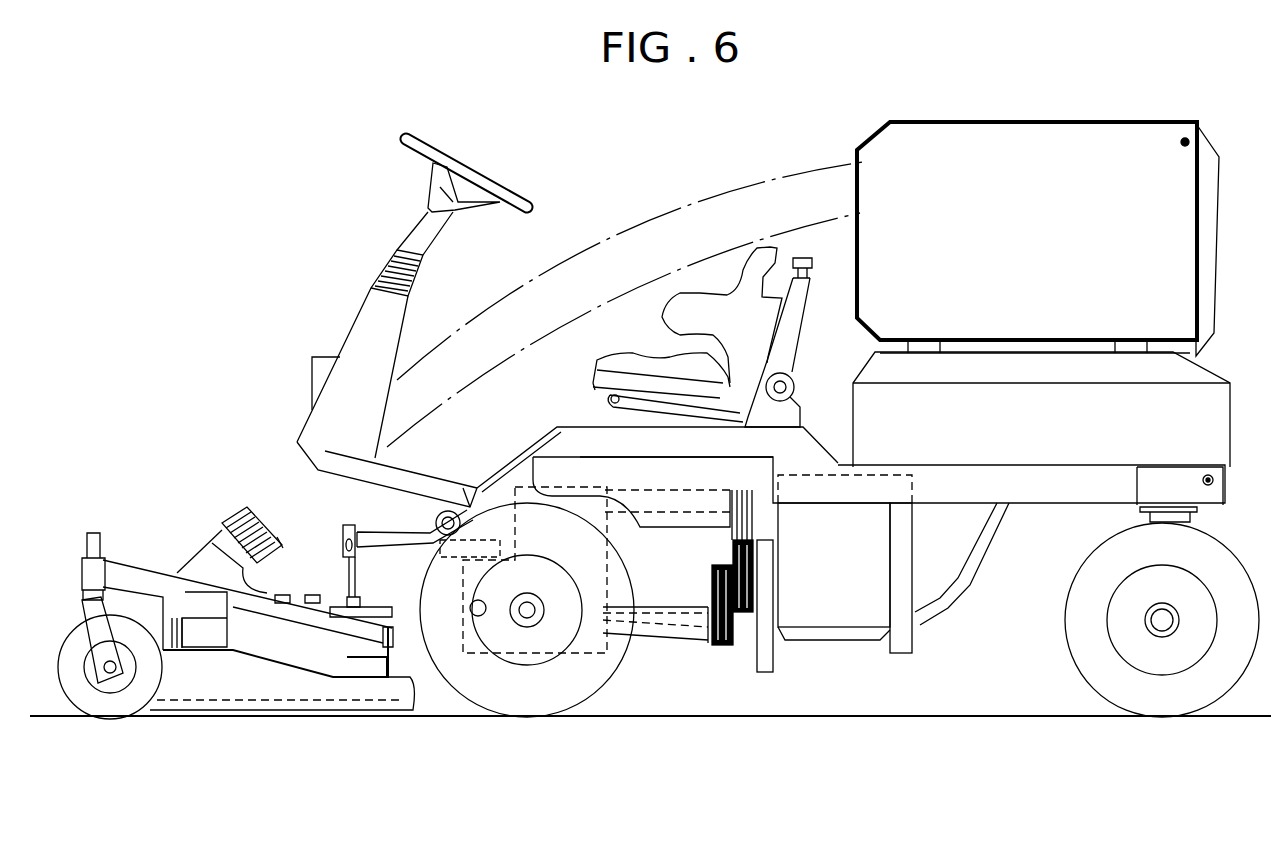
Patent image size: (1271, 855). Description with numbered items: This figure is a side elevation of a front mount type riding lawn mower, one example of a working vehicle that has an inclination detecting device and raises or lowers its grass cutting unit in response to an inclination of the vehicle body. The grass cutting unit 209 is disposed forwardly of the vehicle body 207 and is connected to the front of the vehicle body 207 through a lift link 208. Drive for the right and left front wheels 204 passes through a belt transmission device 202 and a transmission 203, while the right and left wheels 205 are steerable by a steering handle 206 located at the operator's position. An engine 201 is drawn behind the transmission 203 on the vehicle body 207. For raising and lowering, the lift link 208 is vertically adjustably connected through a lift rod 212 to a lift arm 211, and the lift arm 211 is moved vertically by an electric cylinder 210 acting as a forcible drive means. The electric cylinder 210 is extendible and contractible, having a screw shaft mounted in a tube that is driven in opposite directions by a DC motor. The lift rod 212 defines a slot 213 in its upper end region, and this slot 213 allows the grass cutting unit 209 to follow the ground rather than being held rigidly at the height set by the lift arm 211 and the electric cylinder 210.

The engine 201 is at (837, 647).
The belt transmission device 202 is at (720, 647).
The transmission 203 is at (572, 655).
The front wheels 204 is at (475, 692).
The rear wheels 205 is at (1132, 703).
The steering handle 206 is at (492, 170).
The vehicle body 207 is at (1023, 497).
The lift link 208 is at (336, 568).
The grass cutting unit 209 is at (187, 722).
The electric cylinder 210 is at (497, 565).
The lift arm 211 is at (390, 528).
The lift rod 212 is at (383, 567).
The slot 213 is at (343, 543).